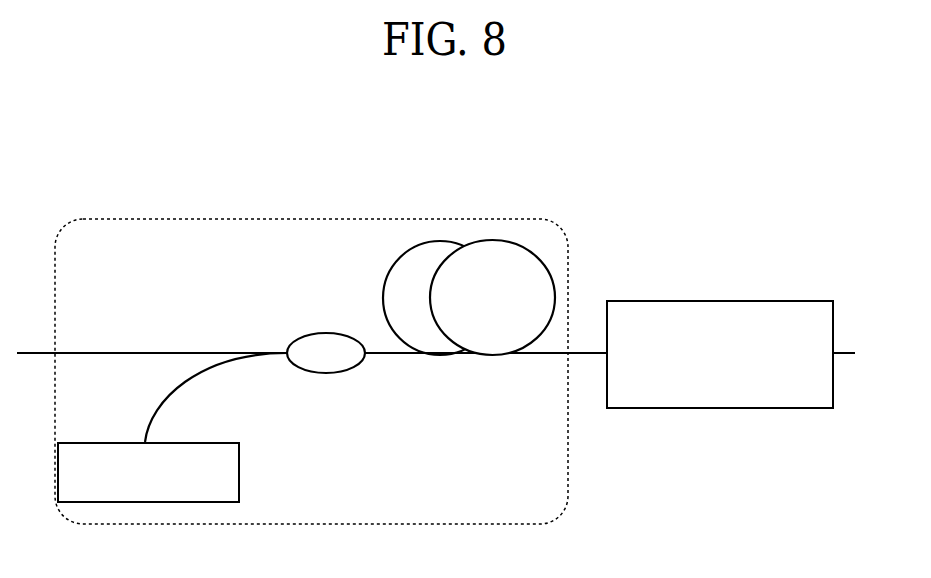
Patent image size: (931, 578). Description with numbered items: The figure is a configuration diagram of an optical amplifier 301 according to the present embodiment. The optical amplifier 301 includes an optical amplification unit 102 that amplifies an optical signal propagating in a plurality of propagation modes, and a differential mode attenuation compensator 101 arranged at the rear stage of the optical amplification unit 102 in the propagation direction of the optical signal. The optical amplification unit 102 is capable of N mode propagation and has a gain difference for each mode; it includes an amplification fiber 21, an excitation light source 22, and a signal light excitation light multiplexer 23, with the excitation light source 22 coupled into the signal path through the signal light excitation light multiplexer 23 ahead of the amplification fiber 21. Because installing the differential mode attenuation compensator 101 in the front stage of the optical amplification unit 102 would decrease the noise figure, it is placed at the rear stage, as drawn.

The optical amplifier 301 is at (527, 203).
The optical amplification unit 102 is at (291, 218).
The amplification fiber 21 is at (383, 298).
The signal light excitation light multiplexer 23 is at (300, 334).
The excitation light source 22 is at (108, 443).
The differential mode attenuation compensator 101 is at (658, 300).